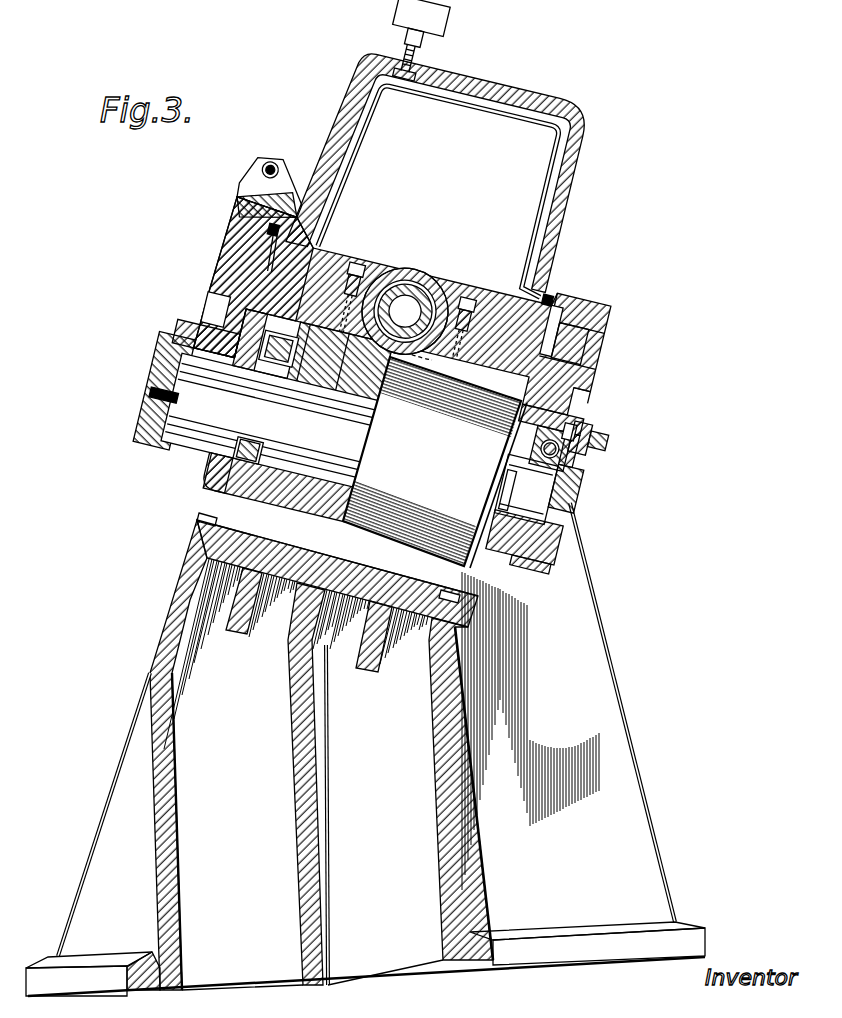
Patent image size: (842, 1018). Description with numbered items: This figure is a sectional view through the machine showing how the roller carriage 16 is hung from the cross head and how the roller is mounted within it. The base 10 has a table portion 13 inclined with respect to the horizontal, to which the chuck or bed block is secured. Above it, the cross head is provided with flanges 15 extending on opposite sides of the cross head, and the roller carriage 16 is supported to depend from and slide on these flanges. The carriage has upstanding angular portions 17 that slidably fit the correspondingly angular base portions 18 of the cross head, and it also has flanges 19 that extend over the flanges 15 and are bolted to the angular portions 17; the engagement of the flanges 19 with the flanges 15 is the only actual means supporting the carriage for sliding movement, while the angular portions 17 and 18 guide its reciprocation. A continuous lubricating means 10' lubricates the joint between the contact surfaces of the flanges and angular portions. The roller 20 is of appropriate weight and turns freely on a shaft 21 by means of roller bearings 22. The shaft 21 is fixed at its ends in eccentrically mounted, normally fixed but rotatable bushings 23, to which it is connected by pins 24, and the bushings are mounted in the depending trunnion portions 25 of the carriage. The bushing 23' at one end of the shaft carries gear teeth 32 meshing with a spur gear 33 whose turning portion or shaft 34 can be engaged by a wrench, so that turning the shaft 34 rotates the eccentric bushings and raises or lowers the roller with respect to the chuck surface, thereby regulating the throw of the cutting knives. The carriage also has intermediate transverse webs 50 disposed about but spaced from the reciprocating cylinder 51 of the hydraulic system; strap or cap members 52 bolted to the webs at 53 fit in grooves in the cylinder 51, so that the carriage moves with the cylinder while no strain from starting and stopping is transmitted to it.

The base 10 is at (365, 749).
The continuous lubricating means 10' is at (450, 153).
The table portion 13 is at (318, 547).
The flanges 15 is at (560, 343).
The roller carriage 16 is at (590, 395).
The angular portions 17 is at (577, 366).
The angular base portions 18 is at (258, 262).
The flanges 19 is at (586, 305).
The roller 20 is at (435, 462).
The shaft 21 is at (340, 442).
The roller bearings 22 is at (277, 360).
The bushings 23 is at (368, 431).
The bushing 23' is at (554, 542).
The pins 24 is at (158, 398).
The trunnion portions 25 is at (203, 337).
The gear teeth 32 is at (583, 462).
The spur gear 33 is at (595, 425).
The shaft 34 is at (607, 443).
The transverse webs 50 is at (430, 357).
The reciprocating cylinder 51 is at (437, 283).
The strap or cap members 52 is at (407, 272).
The bolts 53 is at (362, 268).